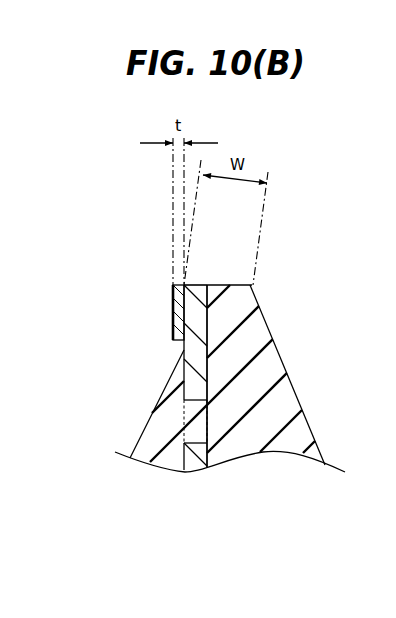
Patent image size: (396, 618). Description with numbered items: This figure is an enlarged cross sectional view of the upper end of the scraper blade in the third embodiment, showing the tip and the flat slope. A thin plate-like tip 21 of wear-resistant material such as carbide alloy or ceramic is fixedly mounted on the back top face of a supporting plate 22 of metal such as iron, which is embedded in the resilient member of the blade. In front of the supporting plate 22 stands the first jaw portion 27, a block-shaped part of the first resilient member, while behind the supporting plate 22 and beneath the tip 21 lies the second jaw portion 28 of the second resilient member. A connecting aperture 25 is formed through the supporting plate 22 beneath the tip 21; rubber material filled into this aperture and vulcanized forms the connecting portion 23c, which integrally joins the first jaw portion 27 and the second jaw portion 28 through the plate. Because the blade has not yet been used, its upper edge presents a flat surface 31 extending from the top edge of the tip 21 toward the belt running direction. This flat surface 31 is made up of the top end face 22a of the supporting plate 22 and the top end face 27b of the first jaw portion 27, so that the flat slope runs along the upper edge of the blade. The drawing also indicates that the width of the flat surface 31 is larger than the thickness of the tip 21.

The tip 21 is at (173, 305).
The supporting plate 22 is at (184, 380).
The top end face of supporting plate 22a is at (200, 284).
The connecting portion 23c is at (190, 420).
The connecting aperture 25 is at (134, 421).
The first jaw portion 27 is at (293, 383).
The top end face of first jaw portion 27b is at (228, 285).
The second jaw portion 28 is at (155, 437).
The flat surface 31 is at (284, 249).